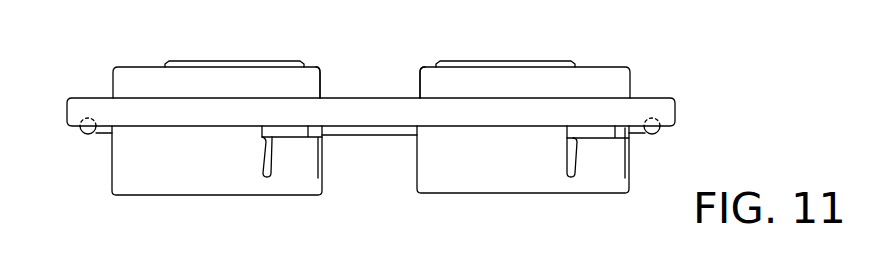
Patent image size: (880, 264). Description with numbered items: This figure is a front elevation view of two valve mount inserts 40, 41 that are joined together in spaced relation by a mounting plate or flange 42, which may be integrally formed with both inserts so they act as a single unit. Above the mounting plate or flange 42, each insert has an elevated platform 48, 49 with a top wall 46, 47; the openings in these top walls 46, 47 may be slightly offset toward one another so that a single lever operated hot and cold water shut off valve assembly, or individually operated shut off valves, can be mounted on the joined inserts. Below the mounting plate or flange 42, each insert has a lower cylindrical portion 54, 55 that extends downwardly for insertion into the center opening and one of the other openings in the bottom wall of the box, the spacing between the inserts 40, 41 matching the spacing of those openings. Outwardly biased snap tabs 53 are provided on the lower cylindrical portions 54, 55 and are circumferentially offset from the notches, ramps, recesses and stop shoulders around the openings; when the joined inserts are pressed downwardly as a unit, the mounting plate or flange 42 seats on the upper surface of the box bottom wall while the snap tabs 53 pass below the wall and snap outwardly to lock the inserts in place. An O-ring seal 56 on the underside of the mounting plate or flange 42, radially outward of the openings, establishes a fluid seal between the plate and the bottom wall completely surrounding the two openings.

The valve mount insert 40 is at (106, 76).
The valve mount insert 41 is at (655, 76).
The mounting plate or flange 42 is at (667, 106).
The top wall 46 is at (180, 61).
The top wall 47 is at (557, 61).
The elevated platform 48 is at (311, 80).
The elevated platform 49 is at (425, 80).
The snap tab 53 is at (303, 155).
The lower cylindrical portion 54 is at (123, 158).
The lower cylindrical portion 55 is at (432, 170).
The O-ring seal 56 is at (657, 134).